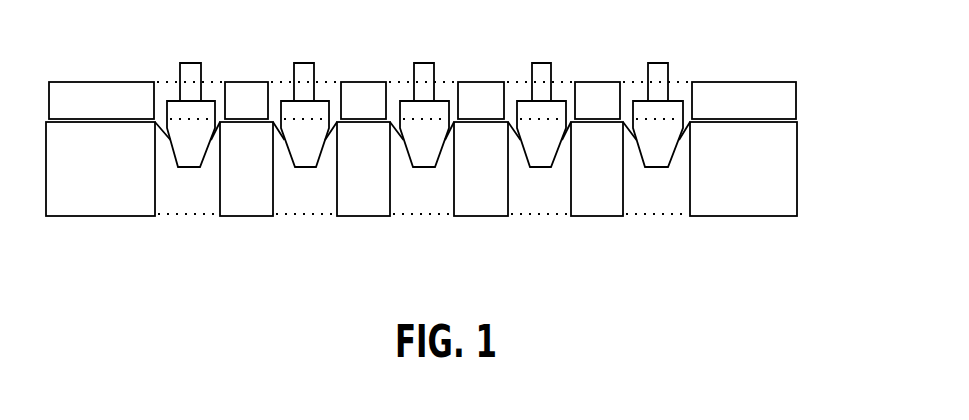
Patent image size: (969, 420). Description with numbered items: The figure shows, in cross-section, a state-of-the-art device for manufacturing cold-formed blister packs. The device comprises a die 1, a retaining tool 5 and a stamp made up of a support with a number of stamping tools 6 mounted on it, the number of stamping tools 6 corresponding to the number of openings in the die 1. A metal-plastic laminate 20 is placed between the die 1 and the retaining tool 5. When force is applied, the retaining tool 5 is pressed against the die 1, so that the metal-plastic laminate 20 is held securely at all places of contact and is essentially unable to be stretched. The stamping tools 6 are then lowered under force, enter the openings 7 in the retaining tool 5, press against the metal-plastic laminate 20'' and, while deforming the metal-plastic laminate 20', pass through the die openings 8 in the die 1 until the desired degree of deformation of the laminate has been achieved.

The die 1 is at (775, 185).
The retaining tool 5 is at (775, 105).
The stamping tool 6 is at (660, 77).
The opening in the retaining tool 7 is at (625, 110).
The die opening 8 is at (537, 192).
The metal-plastic laminate 20 is at (664, 195).
The deformed metal-plastic laminate 20' is at (652, 195).
The pressed metal-plastic laminate 20'' is at (667, 185).